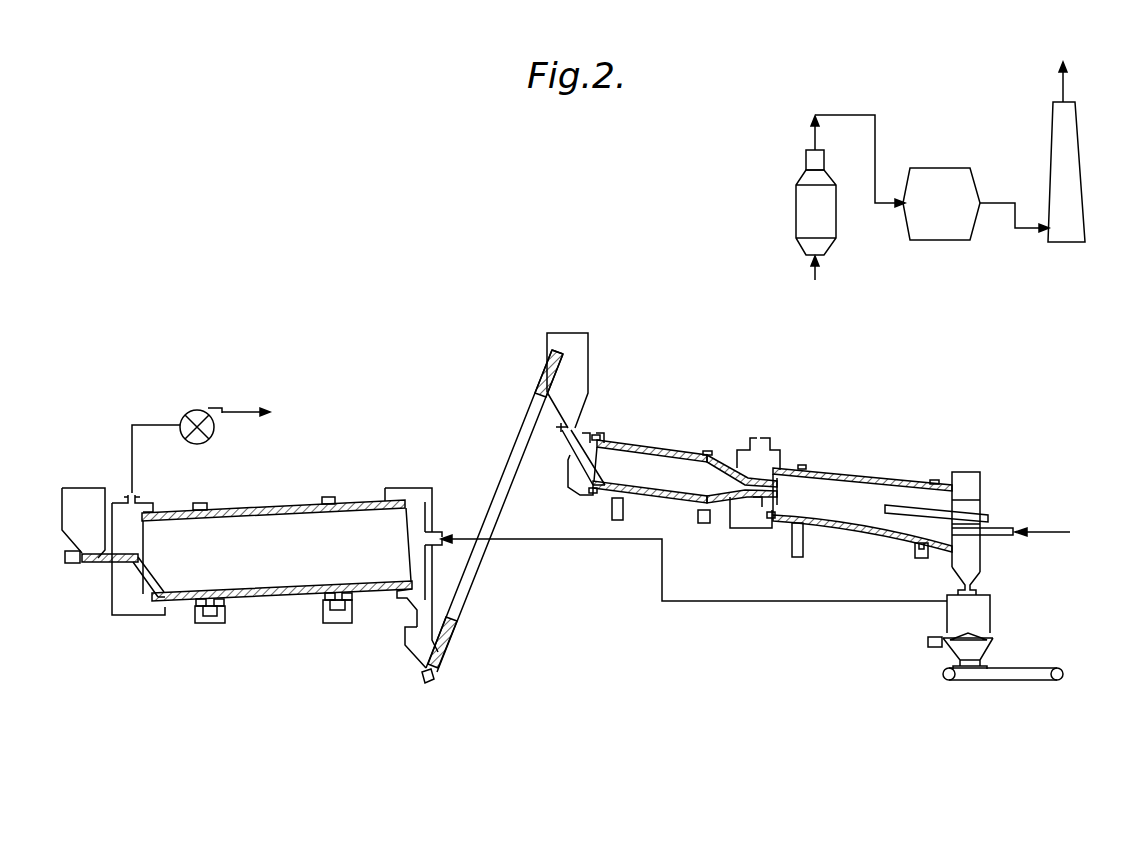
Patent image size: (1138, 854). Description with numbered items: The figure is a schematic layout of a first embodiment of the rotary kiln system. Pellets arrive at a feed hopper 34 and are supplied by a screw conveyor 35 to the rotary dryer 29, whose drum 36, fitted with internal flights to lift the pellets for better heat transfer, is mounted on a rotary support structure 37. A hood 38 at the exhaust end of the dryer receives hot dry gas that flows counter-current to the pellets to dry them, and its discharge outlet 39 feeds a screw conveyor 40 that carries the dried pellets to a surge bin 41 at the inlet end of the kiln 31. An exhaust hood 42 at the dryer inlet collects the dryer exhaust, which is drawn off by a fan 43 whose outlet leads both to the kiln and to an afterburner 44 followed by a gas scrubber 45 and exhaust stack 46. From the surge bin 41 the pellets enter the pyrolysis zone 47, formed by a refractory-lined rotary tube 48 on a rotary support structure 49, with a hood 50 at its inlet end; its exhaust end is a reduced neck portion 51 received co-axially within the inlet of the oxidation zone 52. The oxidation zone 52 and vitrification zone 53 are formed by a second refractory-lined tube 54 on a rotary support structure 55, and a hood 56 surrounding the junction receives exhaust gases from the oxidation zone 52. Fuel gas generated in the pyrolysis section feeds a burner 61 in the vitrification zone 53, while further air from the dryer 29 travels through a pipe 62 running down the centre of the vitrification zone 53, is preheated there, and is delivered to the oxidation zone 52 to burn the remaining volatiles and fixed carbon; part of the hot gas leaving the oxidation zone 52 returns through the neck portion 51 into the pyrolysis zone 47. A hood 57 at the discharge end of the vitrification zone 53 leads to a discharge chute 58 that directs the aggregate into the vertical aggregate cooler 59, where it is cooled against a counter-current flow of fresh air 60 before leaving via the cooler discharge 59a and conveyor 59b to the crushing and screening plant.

The rotary dryer 29 is at (291, 498).
The rotary kiln 31 is at (795, 621).
The feed hopper 34 is at (71, 504).
The screw conveyor 35 is at (94, 565).
The drum 36 is at (278, 598).
The rotary support structure 37 is at (333, 622).
The hood 38 is at (413, 488).
The discharge outlet 39 is at (420, 648).
The screw conveyor 40 is at (478, 560).
The surge bin 41 is at (579, 333).
The exhaust hood 42 is at (150, 502).
The fan 43 is at (193, 412).
The afterburner 44 is at (803, 212).
The gas scrubber 45 is at (938, 225).
The exhaust stack 46 is at (1067, 192).
The pyrolysis zone 47 is at (636, 482).
The rotary tube 48 is at (648, 447).
The rotary support structure 49 is at (704, 525).
The hood 50 is at (577, 480).
The reduced neck portion 51 is at (760, 528).
The oxidation zone 52 is at (798, 486).
The vitrification zone 53 is at (868, 491).
The second refractory-lined tube 54 is at (850, 527).
The rotary support structure 55 is at (922, 560).
The hood 56 is at (772, 452).
The hood 57 is at (970, 472).
The discharge chute 58 is at (985, 575).
The aggregate cooler 59 is at (947, 620).
The cooler discharge 59a is at (993, 647).
The conveyor 59b is at (1015, 681).
The fresh air 60 is at (712, 601).
The burner 61 is at (1000, 536).
The pipe 62 is at (915, 516).